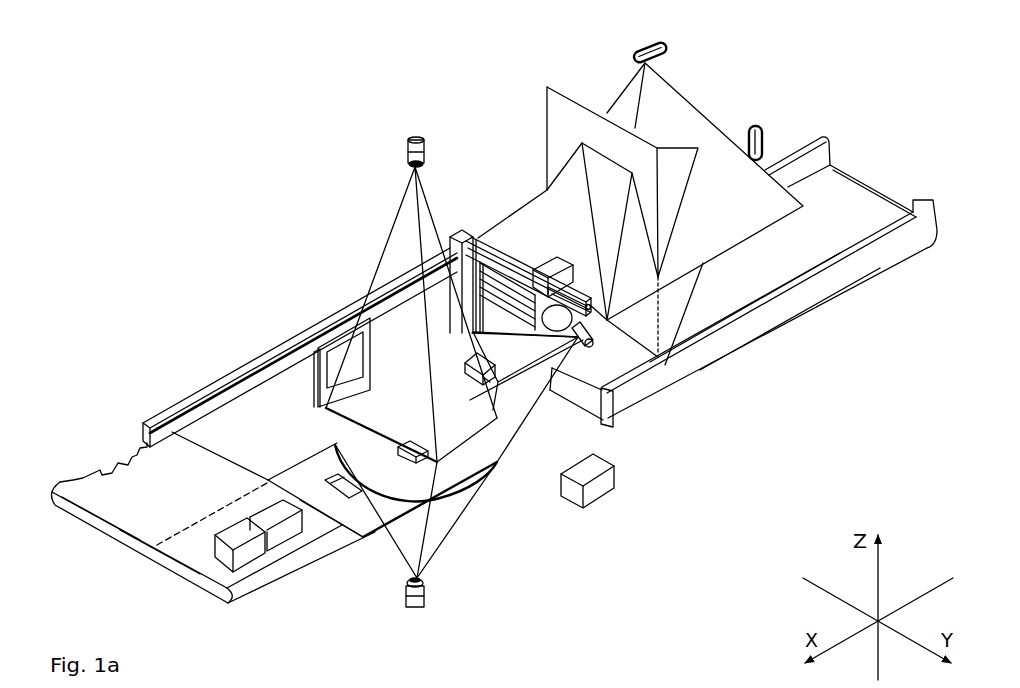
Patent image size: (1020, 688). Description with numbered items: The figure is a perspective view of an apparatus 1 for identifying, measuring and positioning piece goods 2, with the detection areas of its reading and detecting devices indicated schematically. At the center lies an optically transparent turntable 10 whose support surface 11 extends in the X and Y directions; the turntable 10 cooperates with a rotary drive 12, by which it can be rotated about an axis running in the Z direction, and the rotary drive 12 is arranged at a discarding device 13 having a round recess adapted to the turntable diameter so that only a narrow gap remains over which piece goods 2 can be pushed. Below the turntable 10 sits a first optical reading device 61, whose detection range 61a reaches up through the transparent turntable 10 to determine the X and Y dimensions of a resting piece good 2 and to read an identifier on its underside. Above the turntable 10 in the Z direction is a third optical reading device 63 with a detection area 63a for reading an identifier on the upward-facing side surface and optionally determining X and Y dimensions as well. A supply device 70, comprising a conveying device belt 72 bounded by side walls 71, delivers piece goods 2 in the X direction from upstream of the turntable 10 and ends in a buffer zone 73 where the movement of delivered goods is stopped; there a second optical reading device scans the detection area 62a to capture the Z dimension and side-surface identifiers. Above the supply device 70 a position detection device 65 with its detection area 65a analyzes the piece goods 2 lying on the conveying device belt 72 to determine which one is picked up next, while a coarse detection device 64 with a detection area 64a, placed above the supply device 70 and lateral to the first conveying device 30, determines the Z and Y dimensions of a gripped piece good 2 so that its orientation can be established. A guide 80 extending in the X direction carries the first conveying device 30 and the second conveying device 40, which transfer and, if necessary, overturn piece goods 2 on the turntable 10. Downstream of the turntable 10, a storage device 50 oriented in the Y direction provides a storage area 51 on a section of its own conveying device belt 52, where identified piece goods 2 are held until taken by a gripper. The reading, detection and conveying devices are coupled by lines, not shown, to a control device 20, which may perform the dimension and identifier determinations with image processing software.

The apparatus 1 is at (172, 207).
The piece goods 2 is at (222, 555).
The optically transparent turntable 10 is at (470, 490).
The support surface 11 is at (383, 487).
The rotary drive 12 is at (337, 468).
The discarding device 13 is at (363, 520).
The control device 20 is at (602, 490).
The first conveying device 30 is at (468, 205).
The second conveying device 40 is at (358, 264).
The storage device 50 is at (110, 565).
The storage area 51 is at (190, 548).
The conveying device belt 52 is at (135, 508).
The first optical reading device 61 is at (410, 607).
The detection range 61a is at (440, 525).
The detection area 62a is at (520, 393).
The third optical reading device 63 is at (409, 146).
The detection area 63a is at (403, 243).
The coarse detection device 64 is at (757, 128).
The detection area 64a is at (563, 117).
The position detection device 65 is at (633, 50).
The detection area 65a is at (680, 117).
The supply device 70 is at (871, 309).
The side walls 71 is at (797, 305).
The conveying device belt 72 is at (733, 292).
The buffer zone 73 is at (615, 425).
The guide 80 is at (208, 405).